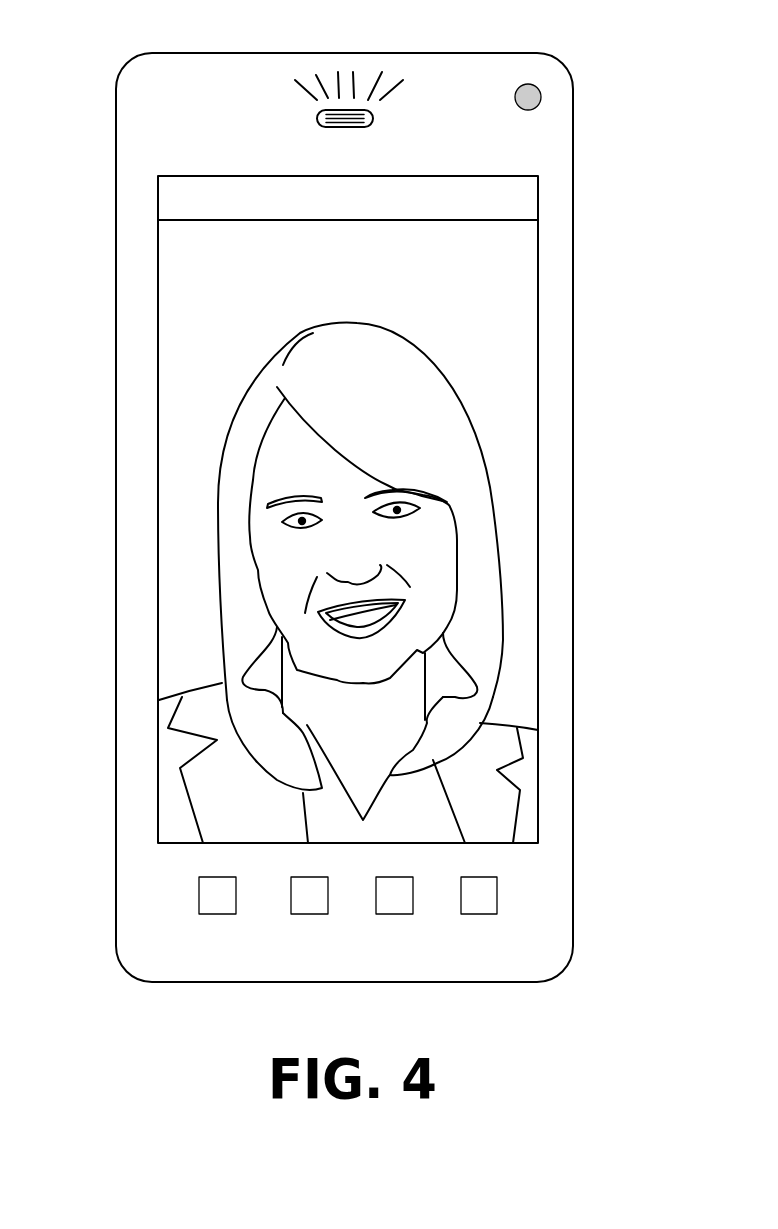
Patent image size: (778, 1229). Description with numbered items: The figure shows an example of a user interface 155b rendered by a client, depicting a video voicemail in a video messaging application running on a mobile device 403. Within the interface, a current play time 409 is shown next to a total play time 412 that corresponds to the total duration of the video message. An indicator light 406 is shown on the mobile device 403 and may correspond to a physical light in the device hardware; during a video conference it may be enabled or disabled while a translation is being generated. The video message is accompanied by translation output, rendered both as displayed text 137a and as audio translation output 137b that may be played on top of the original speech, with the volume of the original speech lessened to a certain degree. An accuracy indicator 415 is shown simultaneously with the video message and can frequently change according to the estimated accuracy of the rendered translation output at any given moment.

The user interface 155b is at (568, 1003).
The mobile device 403 is at (500, 53).
The indicator light 406 is at (530, 110).
The translation output 137b is at (300, 70).
The current play time 409 is at (167, 248).
The total play time 412 is at (247, 258).
The accuracy indicator 415 is at (502, 258).
The translation output 137a is at (502, 820).